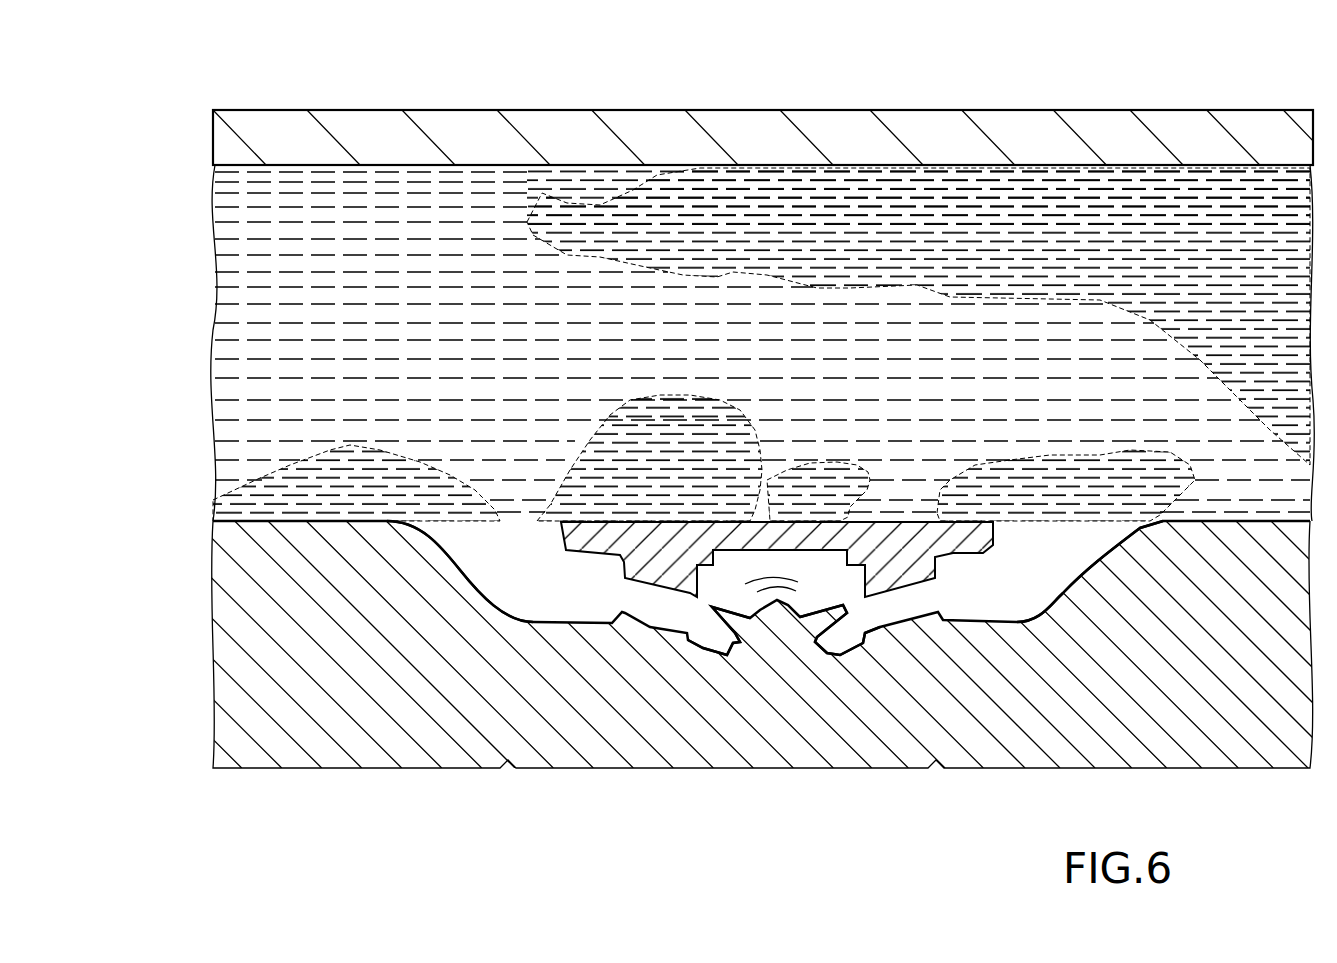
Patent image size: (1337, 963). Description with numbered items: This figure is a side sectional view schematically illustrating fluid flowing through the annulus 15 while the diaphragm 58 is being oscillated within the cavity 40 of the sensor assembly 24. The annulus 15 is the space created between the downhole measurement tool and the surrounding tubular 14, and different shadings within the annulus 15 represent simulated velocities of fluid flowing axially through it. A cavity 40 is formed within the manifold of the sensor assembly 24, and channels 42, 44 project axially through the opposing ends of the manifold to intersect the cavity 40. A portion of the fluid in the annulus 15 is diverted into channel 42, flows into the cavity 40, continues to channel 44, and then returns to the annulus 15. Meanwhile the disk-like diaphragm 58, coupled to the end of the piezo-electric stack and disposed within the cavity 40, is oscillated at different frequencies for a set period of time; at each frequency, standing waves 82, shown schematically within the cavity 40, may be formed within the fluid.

The tubular 14 is at (425, 109).
The annulus 15 is at (246, 274).
The sensor assembly 24 is at (198, 660).
The cavity 40 is at (703, 585).
The channel 42 is at (516, 594).
The channel 44 is at (1064, 552).
The diaphragm 58 is at (835, 632).
The standing waves 82 is at (734, 604).